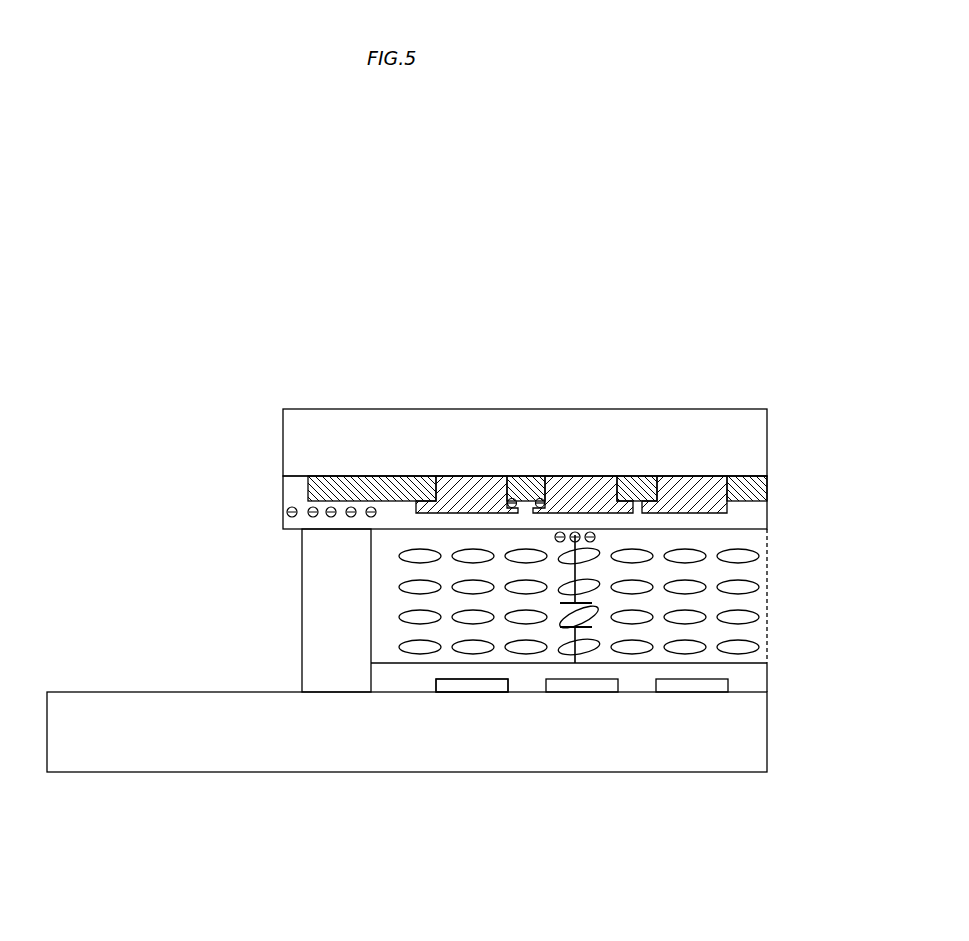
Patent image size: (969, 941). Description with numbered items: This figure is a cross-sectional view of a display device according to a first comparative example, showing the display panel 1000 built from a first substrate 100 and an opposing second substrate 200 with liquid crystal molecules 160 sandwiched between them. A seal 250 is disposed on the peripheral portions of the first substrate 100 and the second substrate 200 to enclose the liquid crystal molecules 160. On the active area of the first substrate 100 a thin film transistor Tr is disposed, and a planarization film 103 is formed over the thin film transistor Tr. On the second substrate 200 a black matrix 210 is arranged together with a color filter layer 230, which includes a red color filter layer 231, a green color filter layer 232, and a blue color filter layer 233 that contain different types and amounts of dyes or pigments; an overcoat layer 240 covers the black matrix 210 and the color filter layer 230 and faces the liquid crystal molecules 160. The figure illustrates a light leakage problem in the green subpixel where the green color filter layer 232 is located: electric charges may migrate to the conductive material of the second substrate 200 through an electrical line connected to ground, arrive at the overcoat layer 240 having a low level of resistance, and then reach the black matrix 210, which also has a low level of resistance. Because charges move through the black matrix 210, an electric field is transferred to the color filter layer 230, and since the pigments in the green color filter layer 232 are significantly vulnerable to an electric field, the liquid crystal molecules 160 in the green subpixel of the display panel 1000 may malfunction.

The display panel 1000 is at (92, 248).
The first substrate 100 is at (763, 728).
The planarization film 103 is at (763, 678).
The thin film transistor Tr is at (482, 690).
The liquid crystal molecules 160 is at (757, 557).
The second substrate 200 is at (763, 431).
The black matrix 210 is at (763, 485).
The color filter layer 230 is at (652, 360).
The red color filter layer 231 is at (482, 478).
The green color filter layer 232 is at (550, 478).
The blue color filter layer 233 is at (694, 478).
The overcoat layer 240 is at (763, 518).
The seal 250 is at (307, 616).